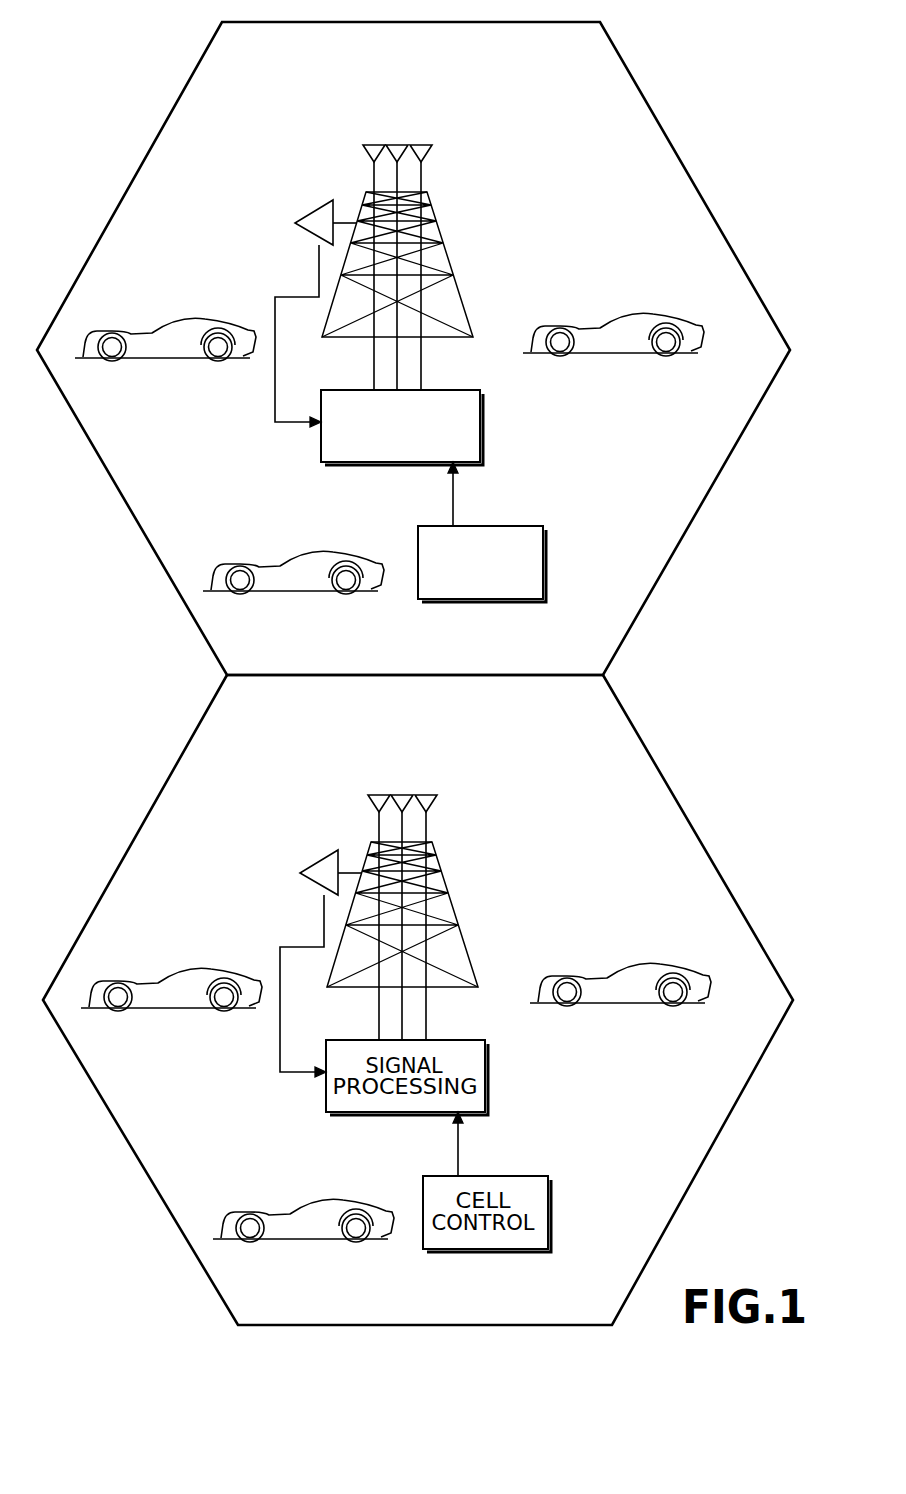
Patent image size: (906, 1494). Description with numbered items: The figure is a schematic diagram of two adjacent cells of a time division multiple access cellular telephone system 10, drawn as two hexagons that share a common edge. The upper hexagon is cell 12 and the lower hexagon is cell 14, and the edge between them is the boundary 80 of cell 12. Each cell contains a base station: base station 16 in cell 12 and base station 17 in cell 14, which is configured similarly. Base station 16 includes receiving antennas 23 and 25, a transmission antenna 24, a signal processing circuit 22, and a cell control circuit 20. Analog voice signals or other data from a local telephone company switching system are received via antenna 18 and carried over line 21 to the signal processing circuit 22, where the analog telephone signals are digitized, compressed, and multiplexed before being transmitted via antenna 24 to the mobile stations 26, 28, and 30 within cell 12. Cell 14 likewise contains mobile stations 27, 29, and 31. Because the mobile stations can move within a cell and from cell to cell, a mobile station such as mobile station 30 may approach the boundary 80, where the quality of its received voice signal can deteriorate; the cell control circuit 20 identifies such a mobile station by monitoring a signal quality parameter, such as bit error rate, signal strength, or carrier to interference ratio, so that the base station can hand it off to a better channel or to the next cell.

The TDMA cellular telephone system 10 is at (702, 56).
The cell 12 is at (677, 158).
The cell 14 is at (682, 805).
The base station 16 is at (477, 189).
The base station 17 is at (481, 840).
The antenna 18 is at (320, 201).
The cell control circuit 20 is at (506, 525).
The line 21 is at (277, 391).
The signal processing circuit 22 is at (443, 388).
The receiving antenna 23 is at (363, 145).
The transmission antenna 24 is at (403, 145).
The receiving antenna 25 is at (426, 145).
The mobile station 26 is at (667, 320).
The mobile station 27 is at (671, 968).
The mobile station 28 is at (220, 322).
The mobile station 29 is at (225, 972).
The mobile station 30 is at (345, 556).
The mobile station 31 is at (357, 1205).
The boundary 80 is at (524, 677).